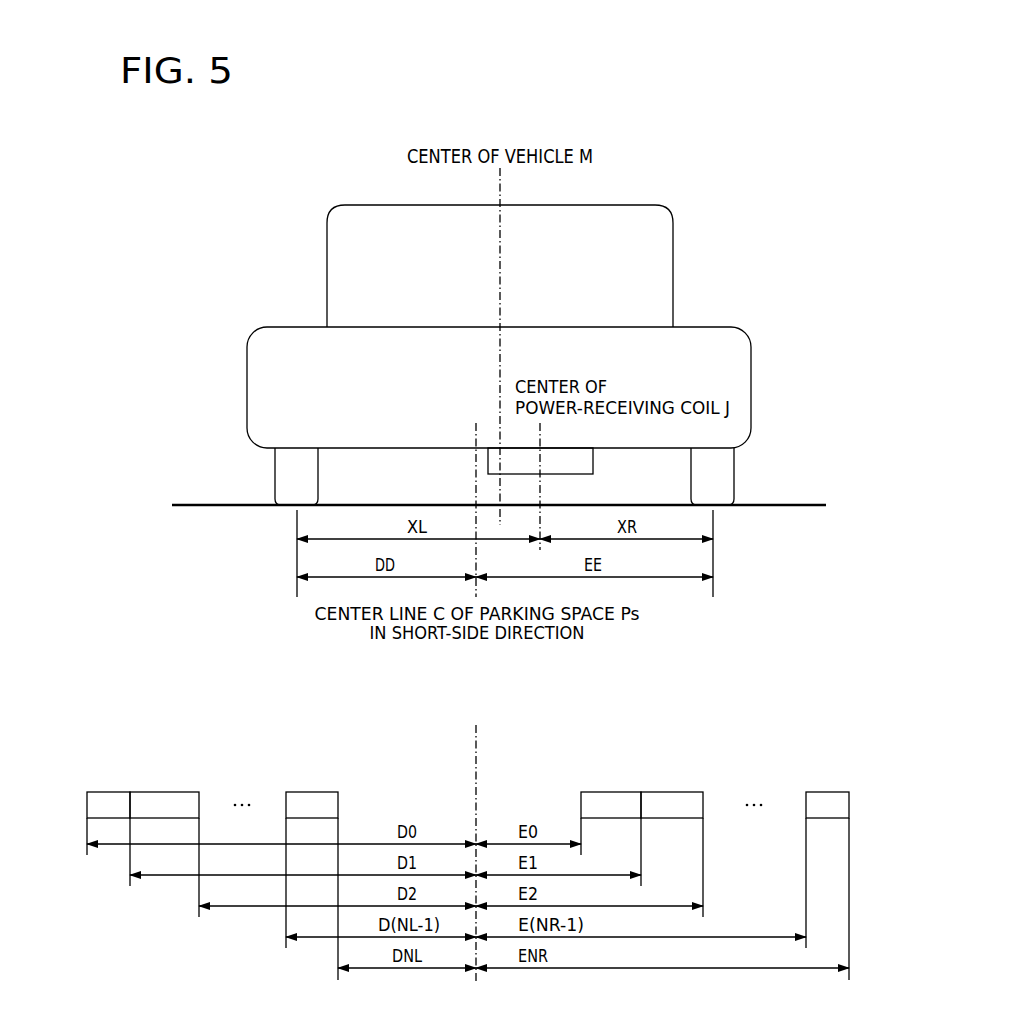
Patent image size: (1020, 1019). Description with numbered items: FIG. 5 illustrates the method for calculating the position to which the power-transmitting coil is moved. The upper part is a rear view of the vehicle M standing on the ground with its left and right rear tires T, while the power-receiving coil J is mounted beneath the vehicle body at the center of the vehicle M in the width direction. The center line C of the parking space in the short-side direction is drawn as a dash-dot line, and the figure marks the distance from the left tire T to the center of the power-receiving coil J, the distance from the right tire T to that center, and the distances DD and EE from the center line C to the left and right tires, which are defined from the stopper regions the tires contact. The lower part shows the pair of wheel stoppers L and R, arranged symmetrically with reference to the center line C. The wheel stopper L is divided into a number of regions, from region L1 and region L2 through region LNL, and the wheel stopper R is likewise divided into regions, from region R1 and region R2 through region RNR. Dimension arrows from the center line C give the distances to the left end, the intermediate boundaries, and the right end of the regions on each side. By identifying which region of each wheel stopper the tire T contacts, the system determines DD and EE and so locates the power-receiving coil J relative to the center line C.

The vehicle M is at (673, 262).
The tire T is at (275, 470).
The power-receiving coil J is at (593, 462).
The center line of the parking space in the short-side direction C is at (476, 703).
The wheel stopper L is at (260, 755).
The wheel stopper R is at (710, 755).
The region L1 is at (106, 792).
The region L2 is at (163, 792).
The region LNL is at (312, 792).
The region R1 is at (611, 792).
The region R2 is at (671, 792).
The region RNR is at (827, 792).